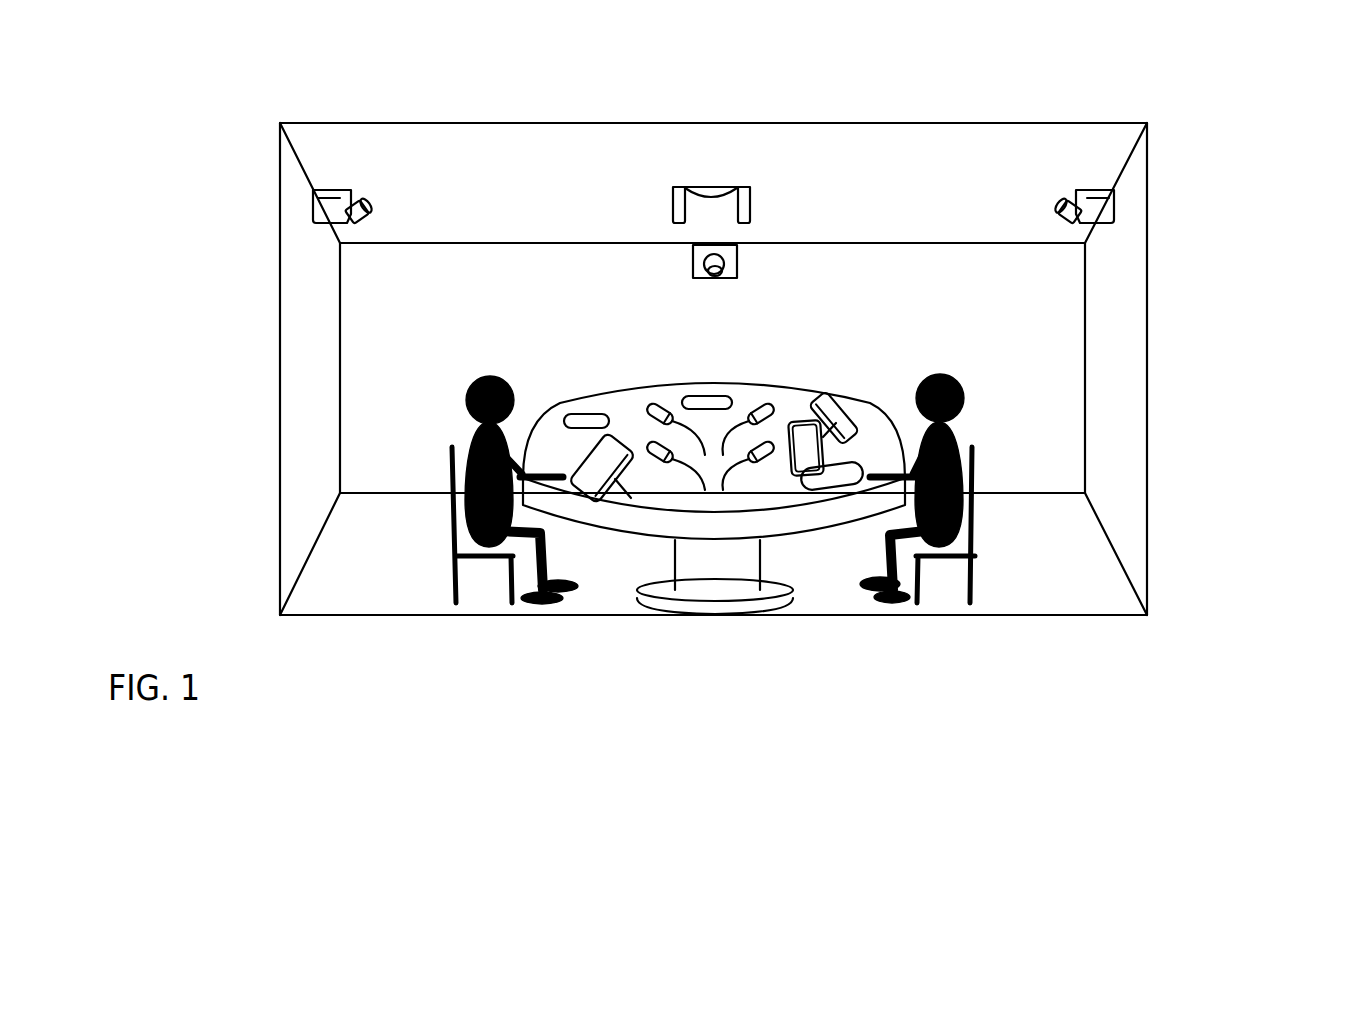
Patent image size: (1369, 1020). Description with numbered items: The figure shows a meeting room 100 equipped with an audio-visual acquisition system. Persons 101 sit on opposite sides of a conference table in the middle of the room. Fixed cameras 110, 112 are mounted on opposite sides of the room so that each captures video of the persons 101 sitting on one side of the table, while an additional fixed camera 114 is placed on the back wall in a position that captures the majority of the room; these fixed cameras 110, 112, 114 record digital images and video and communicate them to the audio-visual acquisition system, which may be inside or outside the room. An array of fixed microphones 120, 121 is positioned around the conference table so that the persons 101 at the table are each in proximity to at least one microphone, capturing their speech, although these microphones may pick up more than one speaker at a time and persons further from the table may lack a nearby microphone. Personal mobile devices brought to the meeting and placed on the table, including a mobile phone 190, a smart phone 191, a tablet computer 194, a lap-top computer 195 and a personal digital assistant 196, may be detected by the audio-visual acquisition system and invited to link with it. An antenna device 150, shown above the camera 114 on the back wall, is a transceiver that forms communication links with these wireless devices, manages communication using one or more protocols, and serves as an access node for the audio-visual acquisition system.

The meeting room 100 is at (252, 94).
The persons 101 is at (460, 459).
The fixed camera 110 is at (330, 205).
The fixed camera 112 is at (1098, 200).
The fixed camera 114 is at (738, 268).
The antenna device 150 is at (712, 189).
The mobile phone 190 is at (580, 413).
The smart phone 191 is at (838, 398).
The tablet computer 194 is at (620, 437).
The lap-top computer 195 is at (837, 500).
The personal digital assistant 196 is at (700, 396).
The fixed microphone 120 is at (662, 458).
The fixed microphone 121 is at (762, 458).